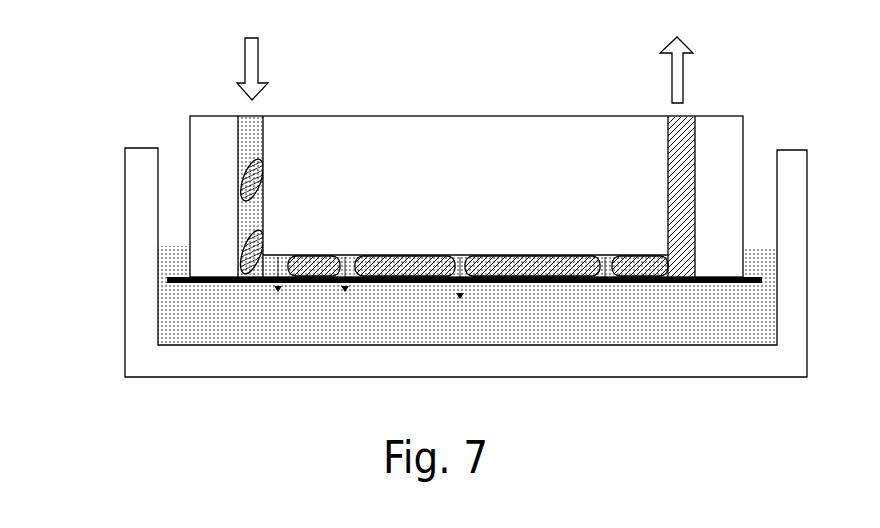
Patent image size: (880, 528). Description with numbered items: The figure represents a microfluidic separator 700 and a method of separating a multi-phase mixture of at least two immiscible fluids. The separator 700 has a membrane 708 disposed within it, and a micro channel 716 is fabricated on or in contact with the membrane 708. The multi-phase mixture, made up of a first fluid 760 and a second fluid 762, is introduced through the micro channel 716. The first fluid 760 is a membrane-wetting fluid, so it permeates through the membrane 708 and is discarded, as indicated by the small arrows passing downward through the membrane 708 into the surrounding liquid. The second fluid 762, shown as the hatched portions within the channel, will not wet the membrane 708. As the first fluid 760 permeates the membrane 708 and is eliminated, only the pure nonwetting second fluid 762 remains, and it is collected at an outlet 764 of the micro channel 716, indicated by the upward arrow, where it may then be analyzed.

The microfluidic separator 700 is at (121, 64).
The membrane 708 is at (178, 275).
The micro channel 716 is at (267, 134).
The first fluid 760 is at (224, 129).
The second fluid 762 is at (255, 180).
The outlet 764 is at (692, 102).